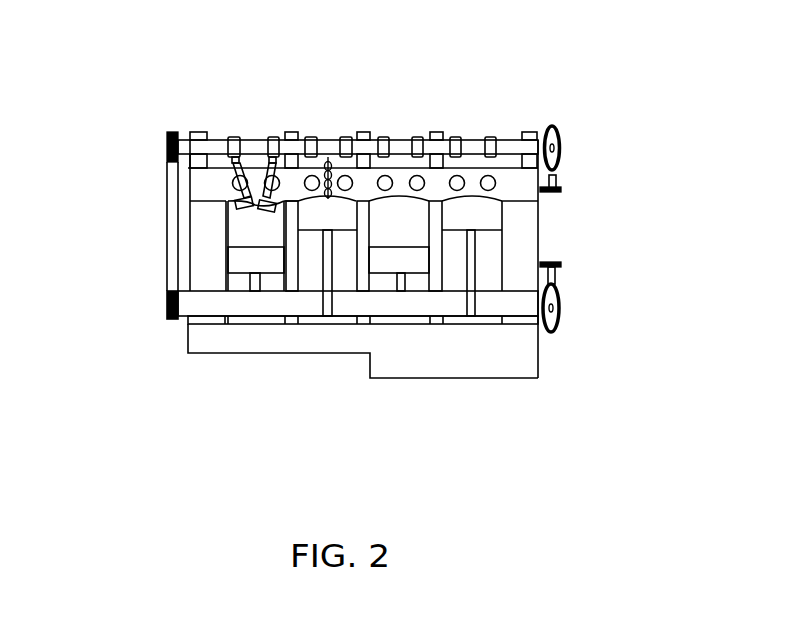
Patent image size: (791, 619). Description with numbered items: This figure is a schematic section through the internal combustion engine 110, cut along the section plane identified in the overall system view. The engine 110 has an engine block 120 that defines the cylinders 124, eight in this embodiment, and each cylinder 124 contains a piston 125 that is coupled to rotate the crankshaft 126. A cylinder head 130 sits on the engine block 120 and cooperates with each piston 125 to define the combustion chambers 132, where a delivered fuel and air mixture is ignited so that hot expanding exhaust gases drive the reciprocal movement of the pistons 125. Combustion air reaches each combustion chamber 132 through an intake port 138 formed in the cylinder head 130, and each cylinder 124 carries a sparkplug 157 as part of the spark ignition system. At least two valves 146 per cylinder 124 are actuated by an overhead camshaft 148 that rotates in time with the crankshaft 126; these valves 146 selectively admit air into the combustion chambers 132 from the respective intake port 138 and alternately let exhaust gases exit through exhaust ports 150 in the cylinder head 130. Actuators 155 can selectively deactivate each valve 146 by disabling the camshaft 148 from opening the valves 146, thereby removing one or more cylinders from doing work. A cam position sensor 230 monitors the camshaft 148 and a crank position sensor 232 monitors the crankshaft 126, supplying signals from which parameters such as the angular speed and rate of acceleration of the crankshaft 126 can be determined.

The internal combustion engine 110 is at (458, 86).
The engine block 120 is at (188, 248).
The cylinders 124 is at (370, 230).
The piston 125 is at (403, 260).
The crankshaft 126 is at (220, 310).
The cylinder head 130 is at (187, 193).
The combustion chambers 132 is at (473, 200).
The intake port 138 is at (389, 172).
The valves 146 is at (262, 203).
The camshaft 148 is at (185, 140).
The exhaust ports 150 is at (347, 138).
The actuators 155 is at (270, 137).
The sparkplug 157 is at (326, 162).
The cam position sensor 230 is at (562, 188).
The crank position sensor 232 is at (558, 268).